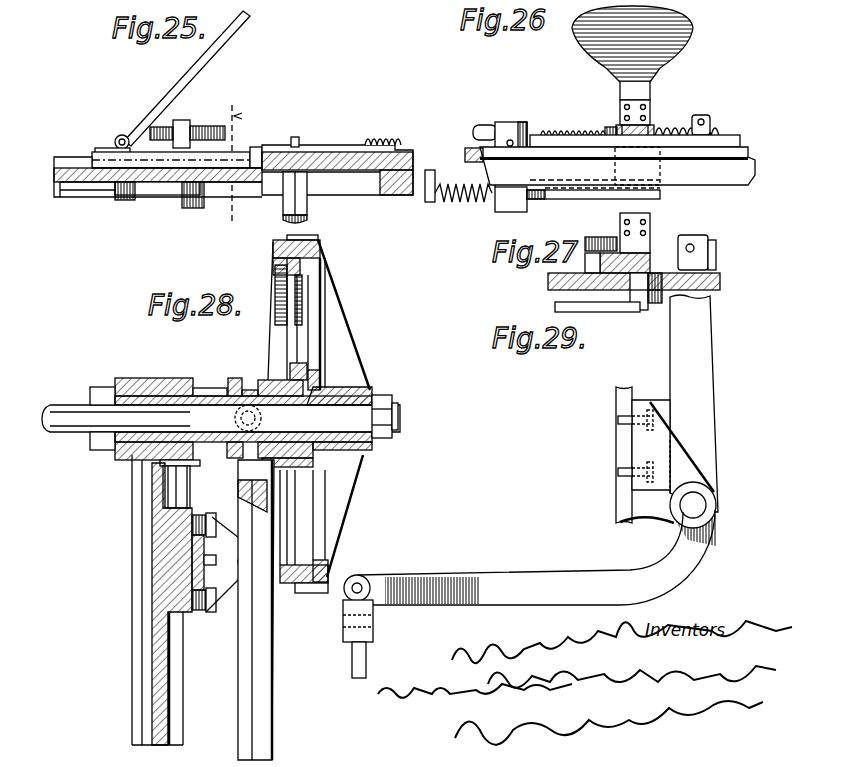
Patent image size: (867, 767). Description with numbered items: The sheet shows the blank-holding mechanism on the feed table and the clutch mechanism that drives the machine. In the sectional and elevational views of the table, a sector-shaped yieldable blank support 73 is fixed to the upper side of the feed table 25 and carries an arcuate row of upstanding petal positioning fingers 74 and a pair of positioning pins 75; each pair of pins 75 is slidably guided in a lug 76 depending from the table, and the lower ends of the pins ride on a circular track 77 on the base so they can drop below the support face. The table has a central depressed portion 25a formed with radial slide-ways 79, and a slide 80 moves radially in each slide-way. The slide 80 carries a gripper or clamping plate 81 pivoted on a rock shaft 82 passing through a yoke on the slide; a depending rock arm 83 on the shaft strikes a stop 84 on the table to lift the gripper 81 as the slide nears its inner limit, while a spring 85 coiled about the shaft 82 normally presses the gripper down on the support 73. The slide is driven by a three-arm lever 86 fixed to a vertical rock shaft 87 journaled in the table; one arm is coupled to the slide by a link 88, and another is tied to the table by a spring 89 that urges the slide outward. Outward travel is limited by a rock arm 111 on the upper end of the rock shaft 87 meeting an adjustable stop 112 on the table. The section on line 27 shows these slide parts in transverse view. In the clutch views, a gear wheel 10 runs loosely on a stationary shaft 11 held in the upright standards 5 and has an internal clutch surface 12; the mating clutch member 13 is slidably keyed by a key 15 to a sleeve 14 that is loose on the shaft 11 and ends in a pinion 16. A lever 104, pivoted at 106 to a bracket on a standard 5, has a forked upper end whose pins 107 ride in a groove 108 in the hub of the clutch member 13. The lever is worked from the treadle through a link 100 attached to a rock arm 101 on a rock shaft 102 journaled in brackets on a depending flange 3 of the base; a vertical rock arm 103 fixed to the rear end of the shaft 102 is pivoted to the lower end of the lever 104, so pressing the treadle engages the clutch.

In FIG. 29, the depending flanges 3 is at (622, 452).
In FIG. 28, the upright frame members or standards 5 is at (145, 648).
In FIG. 29, the gear wheel 10 is at (338, 580).
In FIG. 28, the stationary shaft 11 is at (65, 434).
In FIG. 28, the internal clutch surface 12 is at (292, 595).
In FIG. 28, the clutch member 13 is at (295, 595).
In FIG. 28, the sleeve 14 is at (217, 458).
In FIG. 28, the key 15 is at (250, 383).
In FIG. 28, the pinion 16 is at (207, 388).
In FIG. 25, the feed table 25 is at (56, 158).
In FIG. 26, the feed table 25 is at (448, 150).
In FIG. 25, the central depressed portion 25a is at (85, 185).
In FIG. 27, the central depressed portion 25a is at (548, 279).
In FIG. 25, the section line 27 is at (232, 161).
In FIG. 25, the blank or petal supports 73 is at (340, 146).
In FIG. 26, the blank or petal supports 73 is at (722, 140).
In FIG. 25, the petal positioning fingers 74 is at (385, 136).
In FIG. 26, the petal positioning fingers 74 is at (553, 128).
In FIG. 25, the blank positioning and retaining pins or plungers 75 is at (296, 137).
In FIG. 25, the lugs or projections 76 is at (307, 205).
In FIG. 25, the circular track 77 is at (307, 220).
In FIG. 25, the slide-ways 79 is at (248, 150).
In FIG. 27, the slide-ways 79 is at (712, 248).
In FIG. 25, the slide 80 is at (103, 150).
In FIG. 26, the slide 80 is at (665, 162).
In FIG. 27, the slide 80 is at (655, 300).
In FIG. 25, the gripper or clamping plate 81 is at (190, 78).
In FIG. 26, the gripper or clamping plate 81 is at (660, 58).
In FIG. 27, the gripper or clamping plate 81 is at (650, 231).
In FIG. 25, the rock shaft 82 is at (124, 135).
In FIG. 26, the rock shaft 82 is at (652, 128).
In FIG. 27, the rock shaft 82 is at (598, 237).
In FIG. 25, the rock arm 83 is at (137, 175).
In FIG. 26, the rock arm 83 is at (595, 176).
In FIG. 27, the rock arm 83 is at (600, 258).
In FIG. 25, the stops or abutments 84 is at (125, 200).
In FIG. 27, the stops or abutments 84 is at (585, 265).
In FIG. 26, the spring 85 is at (600, 128).
In FIG. 27, the spring 85 is at (635, 295).
In FIG. 25, the three-arm lever 86 is at (212, 210).
In FIG. 26, the three-arm lever 86 is at (568, 200).
In FIG. 27, the three-arm lever 86 is at (555, 306).
In FIG. 26, the vertical rock shaft 87 is at (512, 122).
In FIG. 25, the link 88 is at (170, 196).
In FIG. 26, the link 88 is at (655, 188).
In FIG. 27, the link 88 is at (640, 305).
In FIG. 26, the spring 89 is at (455, 202).
In FIG. 29, the link 100 is at (366, 657).
In FIG. 29, the rock arm 101 is at (545, 575).
In FIG. 29, the rock shaft 102 is at (700, 510).
In FIG. 29, the vertically extending rock arm 103 is at (697, 420).
In FIG. 28, the lever 104 is at (245, 488).
In FIG. 28, the pivot 106 is at (250, 568).
In FIG. 28, the pins 107 is at (338, 388).
In FIG. 28, the groove 108 is at (246, 385).
In FIG. 26, the rock arms 111 is at (487, 125).
In FIG. 25, the adjustable stops 112 is at (195, 125).
In FIG. 27, the adjustable stops 112 is at (705, 240).